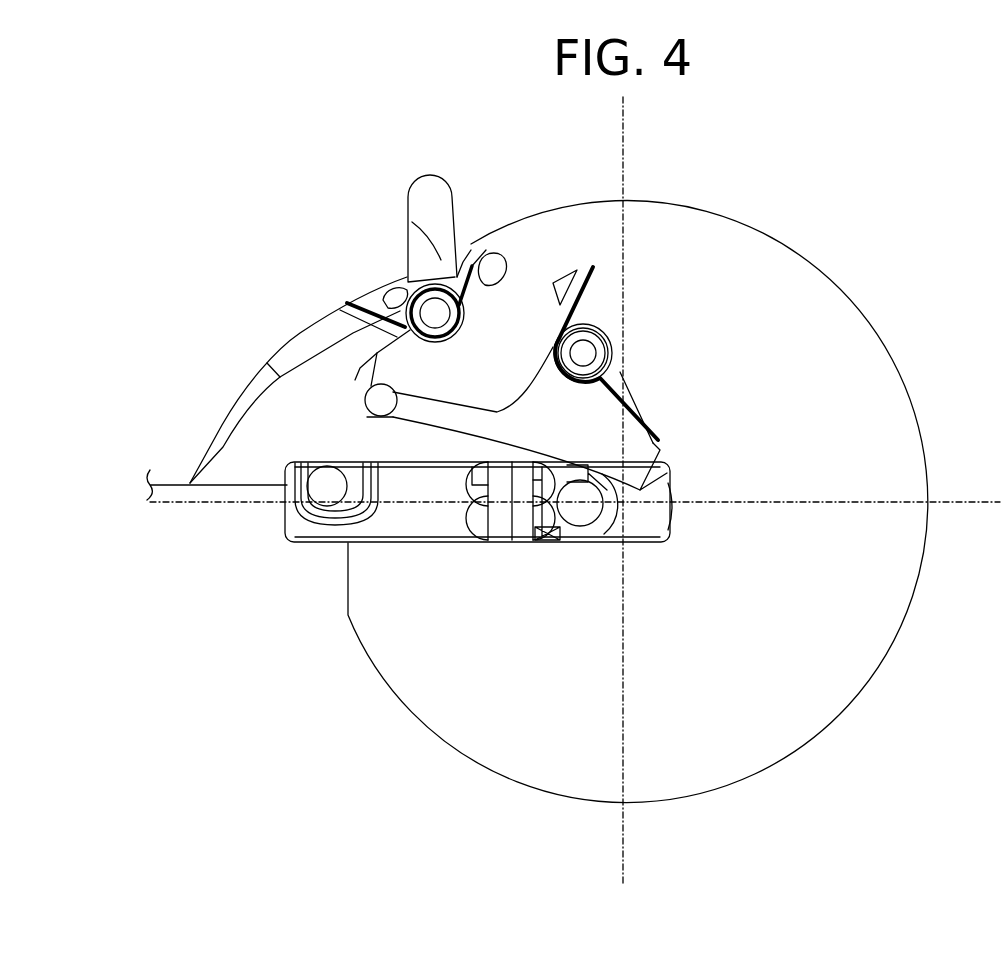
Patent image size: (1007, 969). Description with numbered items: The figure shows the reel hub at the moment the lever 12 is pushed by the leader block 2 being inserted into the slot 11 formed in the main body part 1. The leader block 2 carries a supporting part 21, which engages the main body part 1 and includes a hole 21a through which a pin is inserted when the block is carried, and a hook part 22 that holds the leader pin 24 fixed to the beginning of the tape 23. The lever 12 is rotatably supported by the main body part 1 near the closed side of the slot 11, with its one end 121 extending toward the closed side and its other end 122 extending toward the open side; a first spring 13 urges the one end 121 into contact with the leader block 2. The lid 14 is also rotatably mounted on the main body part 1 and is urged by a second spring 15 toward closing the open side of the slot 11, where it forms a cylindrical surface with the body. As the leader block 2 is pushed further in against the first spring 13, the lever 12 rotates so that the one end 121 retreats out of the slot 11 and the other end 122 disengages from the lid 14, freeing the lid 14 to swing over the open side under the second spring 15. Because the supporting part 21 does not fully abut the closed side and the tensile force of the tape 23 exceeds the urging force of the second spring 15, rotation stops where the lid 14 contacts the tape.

The main body part 1 is at (823, 323).
The leader block 2 is at (448, 543).
The slot 11 is at (645, 540).
The lever 12 is at (573, 440).
The first spring 13 is at (573, 440).
The lid 14 is at (408, 220).
The second spring 15 is at (415, 278).
The supporting part 21 is at (610, 543).
The hole 21a is at (580, 545).
The hook part 22 is at (313, 543).
The tape 23 is at (150, 508).
The leader pin 24 is at (327, 470).
The one end of the lever 121 is at (653, 463).
The other end of the lever 122 is at (383, 397).